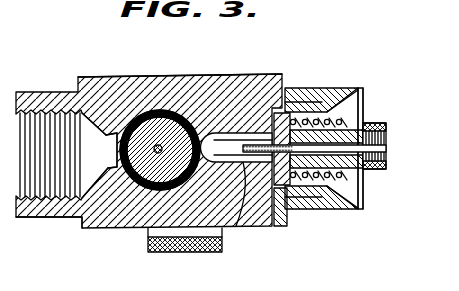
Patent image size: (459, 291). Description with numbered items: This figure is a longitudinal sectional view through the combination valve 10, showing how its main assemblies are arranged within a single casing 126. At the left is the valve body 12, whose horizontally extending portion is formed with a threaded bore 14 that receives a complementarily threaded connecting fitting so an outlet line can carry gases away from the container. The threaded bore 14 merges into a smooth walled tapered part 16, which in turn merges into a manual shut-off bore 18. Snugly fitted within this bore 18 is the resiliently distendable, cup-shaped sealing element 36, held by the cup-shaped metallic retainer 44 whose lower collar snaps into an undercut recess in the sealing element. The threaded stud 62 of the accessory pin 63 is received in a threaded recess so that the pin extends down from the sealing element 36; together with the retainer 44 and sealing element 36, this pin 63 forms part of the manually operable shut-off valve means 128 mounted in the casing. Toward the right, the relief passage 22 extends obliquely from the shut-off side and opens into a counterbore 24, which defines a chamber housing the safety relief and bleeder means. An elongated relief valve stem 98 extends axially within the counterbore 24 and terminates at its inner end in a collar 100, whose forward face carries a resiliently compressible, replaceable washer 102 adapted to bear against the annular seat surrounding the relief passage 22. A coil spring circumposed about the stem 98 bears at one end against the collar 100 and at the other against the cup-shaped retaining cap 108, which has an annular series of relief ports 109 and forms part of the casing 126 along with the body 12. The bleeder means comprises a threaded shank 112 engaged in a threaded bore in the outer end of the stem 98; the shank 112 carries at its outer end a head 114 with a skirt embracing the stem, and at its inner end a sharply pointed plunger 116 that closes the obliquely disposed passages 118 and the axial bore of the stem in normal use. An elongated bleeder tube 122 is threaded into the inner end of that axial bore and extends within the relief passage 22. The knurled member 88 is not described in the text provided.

The valve 10 is at (116, 77).
The valve body 12 is at (206, 73).
The threaded bore 14 is at (48, 110).
The smooth walled tapered part 16 is at (96, 182).
The manual shut-off bore 18 is at (144, 108).
The relief passage 22 is at (240, 133).
The counterbore 24 is at (303, 111).
The shut-off valve sealing element 36 is at (138, 188).
The sealing element retainer 44 is at (110, 170).
The threaded stud 62 is at (158, 145).
The accessory pin 63 is at (126, 134).
The knurled nut 88 is at (172, 253).
The relief valve stem 98 is at (302, 188).
The collar 100 is at (291, 101).
The washer 102 is at (273, 225).
The retaining cap 108 is at (333, 88).
The relief ports 109 is at (363, 108).
The threaded shank 112 is at (373, 170).
The head 114 is at (382, 124).
The plunger 116 is at (323, 209).
The obliquely disposed passages 118 is at (289, 188).
The bleeder tube 122 is at (270, 208).
The casing 126 is at (222, 73).
The manually operable shut-off valve means 128 is at (163, 106).